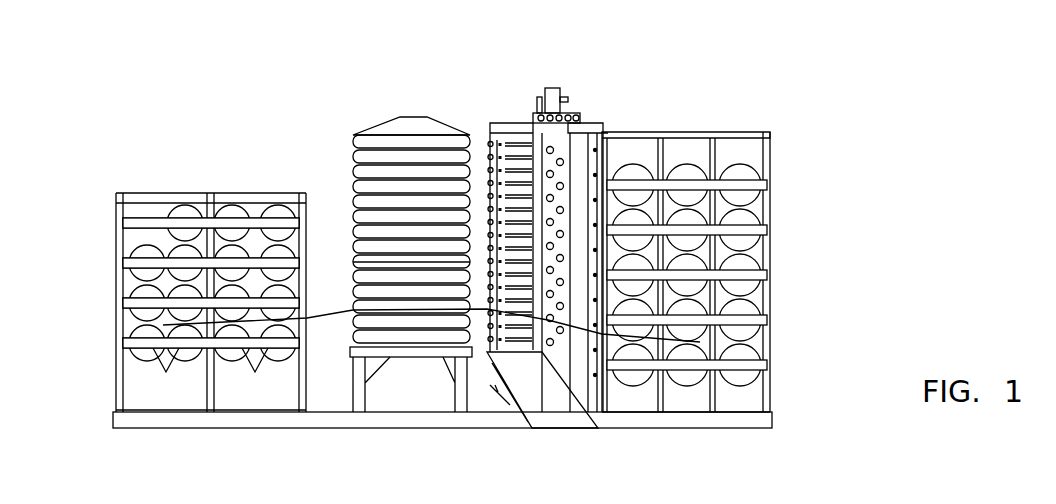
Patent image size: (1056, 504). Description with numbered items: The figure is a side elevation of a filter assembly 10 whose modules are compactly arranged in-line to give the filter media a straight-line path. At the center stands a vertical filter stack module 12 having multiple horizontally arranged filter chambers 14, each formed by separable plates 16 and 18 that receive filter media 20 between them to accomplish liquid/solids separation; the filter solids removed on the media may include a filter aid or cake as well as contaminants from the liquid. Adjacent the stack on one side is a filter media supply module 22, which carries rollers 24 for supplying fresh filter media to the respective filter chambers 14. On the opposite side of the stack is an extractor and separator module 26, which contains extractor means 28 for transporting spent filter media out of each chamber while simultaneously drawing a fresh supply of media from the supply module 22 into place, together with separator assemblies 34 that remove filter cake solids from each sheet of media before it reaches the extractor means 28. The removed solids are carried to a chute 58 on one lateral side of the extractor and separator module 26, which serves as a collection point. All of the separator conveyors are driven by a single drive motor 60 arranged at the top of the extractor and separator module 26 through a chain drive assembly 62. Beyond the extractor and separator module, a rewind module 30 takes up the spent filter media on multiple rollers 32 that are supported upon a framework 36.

The filter assembly 10 is at (507, 31).
The vertical filter stack module 12 is at (415, 109).
The filter chambers 14 is at (346, 220).
The separable plate 16 is at (353, 257).
The separable plate 18 is at (353, 259).
The filter media 20 is at (322, 318).
The filter media supply module 22 is at (198, 192).
The rollers 24 is at (125, 292).
The extractor and separator module 26 is at (597, 119).
The extractor means 28 is at (558, 170).
The rewind module 30 is at (752, 120).
The rollers 32 is at (757, 215).
The separator assemblies 34 is at (520, 126).
The framework 36 is at (771, 147).
The chute 58 is at (556, 421).
The drive motor 60 is at (553, 93).
The chain drive assembly 62 is at (535, 102).